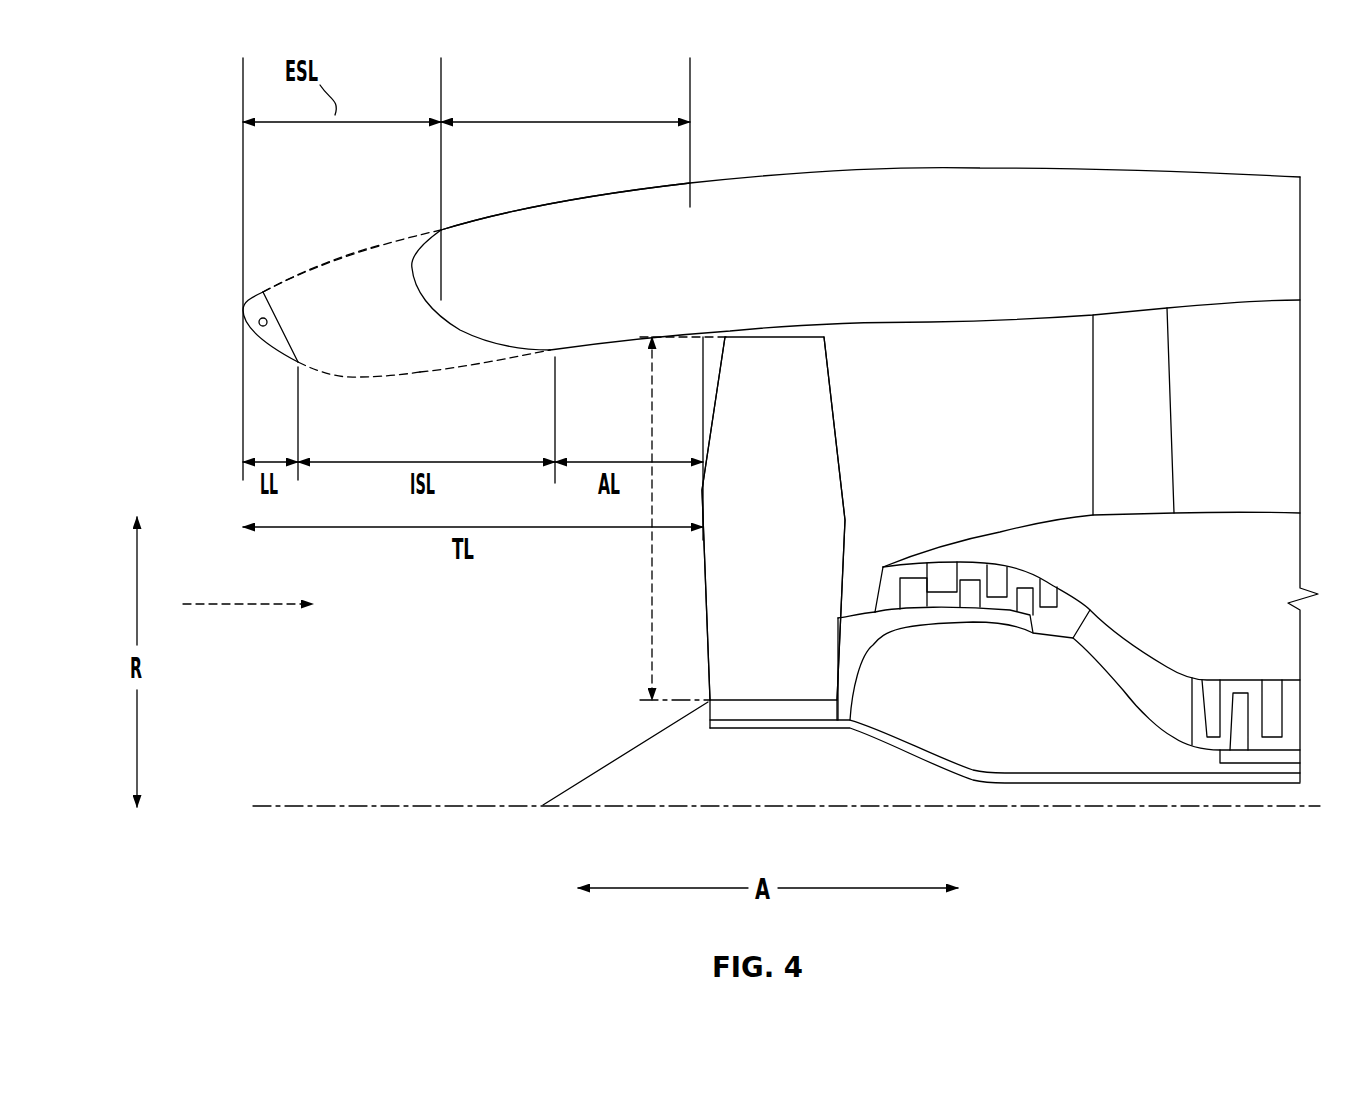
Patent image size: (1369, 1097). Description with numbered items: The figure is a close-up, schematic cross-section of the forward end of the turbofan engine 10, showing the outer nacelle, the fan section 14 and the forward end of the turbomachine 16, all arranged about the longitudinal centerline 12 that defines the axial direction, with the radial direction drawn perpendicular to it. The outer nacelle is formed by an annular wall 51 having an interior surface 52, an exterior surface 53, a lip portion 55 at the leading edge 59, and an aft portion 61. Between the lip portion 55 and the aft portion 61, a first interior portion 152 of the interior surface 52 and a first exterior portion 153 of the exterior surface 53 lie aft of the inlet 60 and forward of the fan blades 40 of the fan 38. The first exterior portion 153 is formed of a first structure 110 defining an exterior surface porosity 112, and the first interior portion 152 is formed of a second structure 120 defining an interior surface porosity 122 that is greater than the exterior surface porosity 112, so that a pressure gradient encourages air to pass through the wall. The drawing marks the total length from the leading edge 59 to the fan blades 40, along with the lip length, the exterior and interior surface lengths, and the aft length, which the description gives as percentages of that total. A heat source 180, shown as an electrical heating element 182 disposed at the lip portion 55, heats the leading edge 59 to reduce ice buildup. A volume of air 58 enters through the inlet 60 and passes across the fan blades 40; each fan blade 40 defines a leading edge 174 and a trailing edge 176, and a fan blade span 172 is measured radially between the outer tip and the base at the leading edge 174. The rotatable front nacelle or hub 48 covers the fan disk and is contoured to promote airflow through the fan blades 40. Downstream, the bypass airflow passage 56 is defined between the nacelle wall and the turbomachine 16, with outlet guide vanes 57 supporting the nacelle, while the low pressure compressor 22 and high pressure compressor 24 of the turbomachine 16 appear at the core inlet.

The turbofan engine 10 is at (1037, 122).
The longitudinal centerline 12 is at (365, 807).
The fan section 14 is at (597, 218).
The turbomachine 16 is at (1052, 518).
The low pressure compressor 22 is at (1063, 578).
The high pressure compressor 24 is at (1235, 663).
The fan 38 is at (793, 297).
The fan blades 40 is at (823, 508).
The front nacelle or hub 48 is at (572, 784).
The annular wall 51 is at (847, 203).
The interior surface 52 is at (485, 394).
The exterior surface 53 is at (352, 215).
The lip portion 55 is at (243, 307).
The bypass airflow passage 56 is at (1025, 411).
The outlet guide vanes 57 is at (1157, 436).
The volume of air 58 is at (263, 605).
The leading edge 59 is at (256, 322).
The inlet 60 is at (198, 515).
The aft portion 61 is at (523, 200).
The first structure 110 is at (321, 239).
The exterior surface porosity 112 is at (323, 252).
The second structure 120 is at (359, 404).
The interior surface porosity 122 is at (345, 378).
The first interior portion 152 is at (480, 367).
The first exterior portion 153 is at (392, 235).
The fan blade span 172 is at (652, 615).
The leading edge 174 is at (702, 614).
The trailing edge 176 is at (848, 465).
The heat source 180 is at (197, 337).
The electrical heating element 182 is at (262, 328).